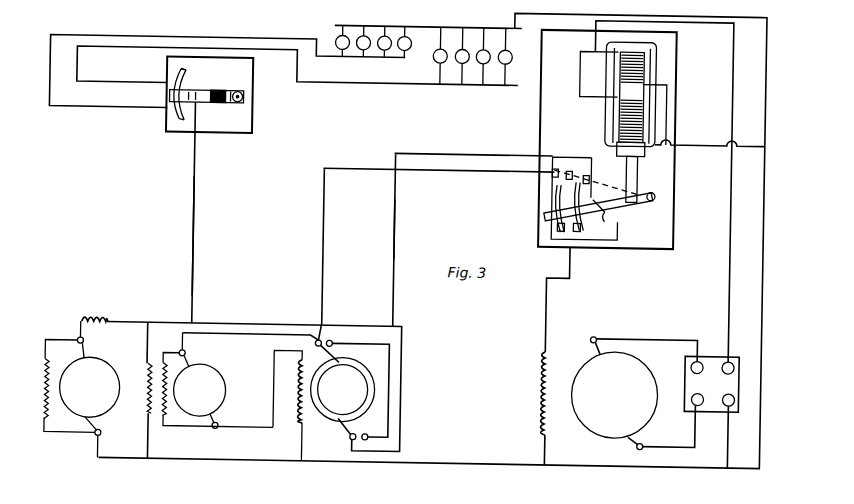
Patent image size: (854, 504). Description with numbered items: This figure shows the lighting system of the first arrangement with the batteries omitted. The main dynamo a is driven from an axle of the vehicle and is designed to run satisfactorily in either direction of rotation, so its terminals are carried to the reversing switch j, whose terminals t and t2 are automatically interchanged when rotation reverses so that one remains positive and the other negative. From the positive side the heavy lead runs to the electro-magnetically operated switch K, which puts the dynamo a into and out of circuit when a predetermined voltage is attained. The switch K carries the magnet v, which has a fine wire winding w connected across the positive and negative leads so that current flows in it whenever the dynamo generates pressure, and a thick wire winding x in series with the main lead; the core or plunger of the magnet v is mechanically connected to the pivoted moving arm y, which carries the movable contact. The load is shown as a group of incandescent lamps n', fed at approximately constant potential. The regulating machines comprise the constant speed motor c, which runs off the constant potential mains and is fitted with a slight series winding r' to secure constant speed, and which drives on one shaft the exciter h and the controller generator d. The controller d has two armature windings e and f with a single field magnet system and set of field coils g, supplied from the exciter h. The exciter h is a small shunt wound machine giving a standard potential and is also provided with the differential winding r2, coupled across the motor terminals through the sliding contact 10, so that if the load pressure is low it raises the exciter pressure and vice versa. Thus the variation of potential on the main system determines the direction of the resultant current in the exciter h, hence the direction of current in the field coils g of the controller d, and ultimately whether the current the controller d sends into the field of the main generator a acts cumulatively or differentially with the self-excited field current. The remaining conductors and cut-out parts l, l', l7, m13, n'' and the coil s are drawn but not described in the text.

The incandescent lamps n' is at (424, 55).
The cut-out box l is at (219, 95).
The cut-out spring strip l' is at (166, 109).
The cut-out contact l7 is at (181, 78).
The conductor m13 is at (198, 236).
The conductor n'' is at (404, 229).
The electro-magnetically operated switch K is at (652, 140).
The magnet v is at (653, 52).
The thick wire winding x is at (645, 72).
The fine wire winding w is at (643, 116).
The moving arm y is at (640, 196).
The constant speed motor c is at (81, 388).
The series winding r' is at (95, 309).
The sliding contact 10 is at (149, 328).
The differential winding r2 is at (141, 387).
The exciter h is at (218, 380).
The field coils g is at (287, 405).
The controller generator d is at (342, 389).
The armature winding e is at (330, 398).
The armature winding f is at (369, 411).
The field coil s is at (535, 393).
The dynamo a is at (634, 393).
The switch j is at (741, 376).
The terminal t is at (736, 361).
The terminal t2 is at (737, 395).